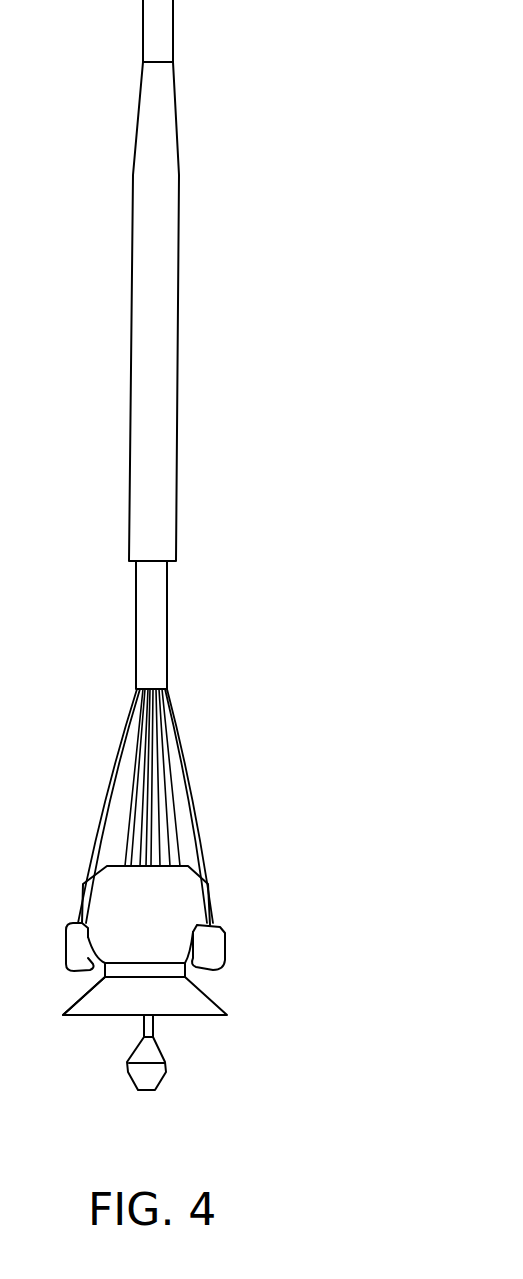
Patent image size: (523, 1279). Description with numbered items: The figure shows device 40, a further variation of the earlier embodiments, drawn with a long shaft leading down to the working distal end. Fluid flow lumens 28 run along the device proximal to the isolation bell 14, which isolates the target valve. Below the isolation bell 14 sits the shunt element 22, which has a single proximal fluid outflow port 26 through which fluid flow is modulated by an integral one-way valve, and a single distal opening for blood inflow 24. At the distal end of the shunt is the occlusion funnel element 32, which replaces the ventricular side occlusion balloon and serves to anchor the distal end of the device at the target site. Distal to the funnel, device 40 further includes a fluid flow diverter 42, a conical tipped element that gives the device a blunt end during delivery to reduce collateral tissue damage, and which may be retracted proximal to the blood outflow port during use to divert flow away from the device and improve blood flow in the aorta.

The device 40 is at (265, 698).
The fluid flow lumens 28 is at (173, 808).
The proximal fluid outflow port 26 is at (155, 866).
The isolation bell 14 is at (182, 918).
The shunt element 22 is at (185, 978).
The occlusion funnel element 32 is at (197, 989).
The distal opening for blood inflow 24 is at (137, 980).
The fluid flow diverter 42 is at (165, 1075).